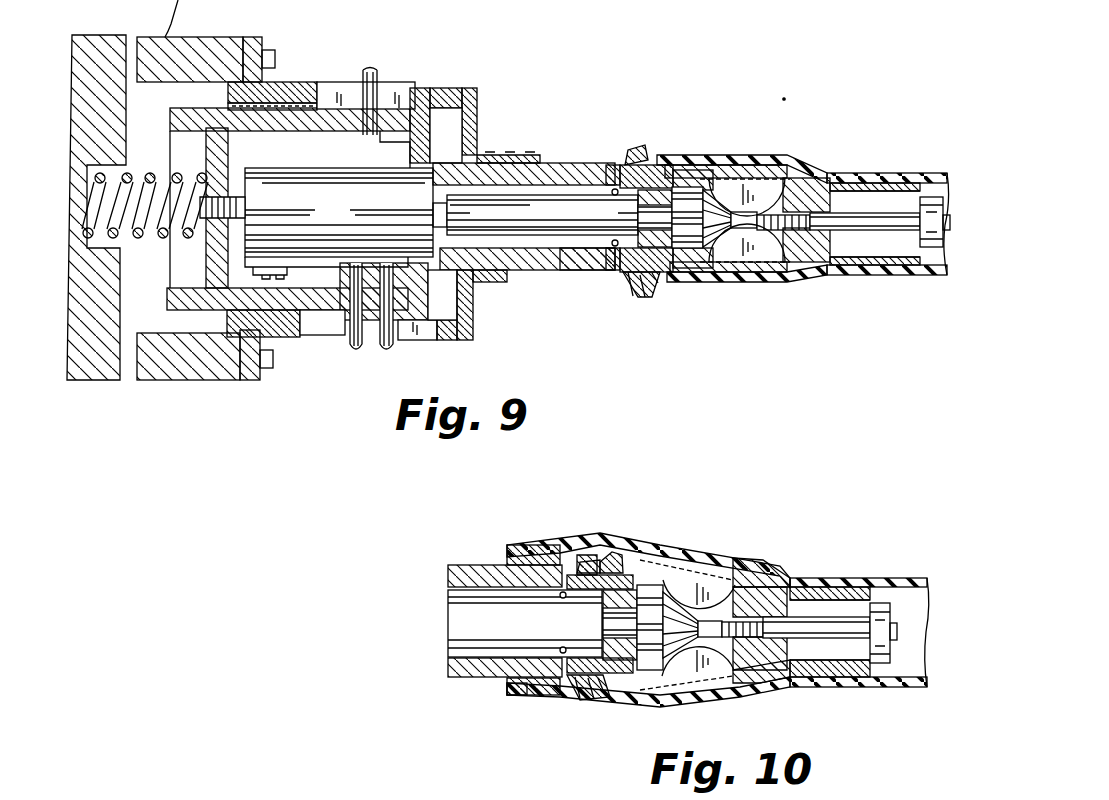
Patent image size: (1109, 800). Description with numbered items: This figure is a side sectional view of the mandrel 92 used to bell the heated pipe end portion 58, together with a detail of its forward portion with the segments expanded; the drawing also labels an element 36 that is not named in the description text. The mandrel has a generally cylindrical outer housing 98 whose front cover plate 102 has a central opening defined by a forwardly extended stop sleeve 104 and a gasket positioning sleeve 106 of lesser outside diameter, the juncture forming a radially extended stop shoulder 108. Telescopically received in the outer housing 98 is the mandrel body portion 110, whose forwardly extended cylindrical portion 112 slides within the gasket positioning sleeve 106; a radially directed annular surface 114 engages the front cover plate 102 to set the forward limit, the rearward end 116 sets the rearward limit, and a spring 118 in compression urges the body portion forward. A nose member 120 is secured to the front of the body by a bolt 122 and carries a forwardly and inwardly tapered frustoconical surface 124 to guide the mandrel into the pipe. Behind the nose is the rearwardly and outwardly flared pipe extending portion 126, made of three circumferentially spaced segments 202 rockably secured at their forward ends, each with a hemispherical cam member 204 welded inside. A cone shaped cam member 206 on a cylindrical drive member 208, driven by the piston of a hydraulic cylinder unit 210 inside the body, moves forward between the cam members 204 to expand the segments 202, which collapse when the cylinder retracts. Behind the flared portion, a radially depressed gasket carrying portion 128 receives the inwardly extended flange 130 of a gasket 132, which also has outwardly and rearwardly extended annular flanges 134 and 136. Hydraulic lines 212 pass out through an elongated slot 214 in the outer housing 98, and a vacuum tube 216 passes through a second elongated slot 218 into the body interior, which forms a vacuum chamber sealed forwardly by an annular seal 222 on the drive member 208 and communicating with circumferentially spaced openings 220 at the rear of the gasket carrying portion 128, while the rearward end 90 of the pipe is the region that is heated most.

In FIG. 9, the outer tube 36 is at (913, 175).
In FIG. 10, the outer tube 36 is at (897, 578).
In FIG. 9, the pipe end portion 58 is at (763, 158).
In FIG. 10, the pipe end portion 58 is at (583, 538).
In FIG. 9, the rearward end of the pipe 90 is at (672, 168).
In FIG. 10, the rearward end of the pipe 90 is at (508, 695).
In FIG. 9, the mandrel 92 is at (117, 392).
In FIG. 9, the outer housing 98 is at (437, 88).
In FIG. 9, the front cover plate 102 is at (475, 92).
In FIG. 9, the stop sleeve 104 is at (490, 283).
In FIG. 9, the gasket positioning sleeve 106 is at (563, 163).
In FIG. 9, the stop shoulder 108 is at (503, 281).
In FIG. 9, the mandrel body portion 110 is at (586, 158).
In FIG. 10, the mandrel body portion 110 is at (477, 560).
In FIG. 9, the cylindrical portion 112 is at (581, 272).
In FIG. 10, the cylindrical portion 112 is at (477, 677).
In FIG. 9, the annular surface 114 is at (434, 132).
In FIG. 9, the rearward end of the body portion 116 is at (170, 112).
In FIG. 9, the spring 118 is at (167, 238).
In FIG. 9, the nose member 120 is at (868, 280).
In FIG. 10, the nose member 120 is at (840, 683).
In FIG. 9, the bolt 122 is at (865, 213).
In FIG. 10, the bolt 122 is at (827, 627).
In FIG. 9, the frustoconical surface 124 is at (913, 250).
In FIG. 10, the frustoconical surface 124 is at (867, 670).
In FIG. 9, the pipe extending portion 126 is at (797, 277).
In FIG. 10, the pipe extending portion 126 is at (772, 678).
In FIG. 9, the gasket carrying portion 128 is at (615, 272).
In FIG. 10, the gasket carrying portion 128 is at (625, 570).
In FIG. 9, the inwardly extended flange 130 is at (657, 284).
In FIG. 10, the inwardly extended flange 130 is at (598, 690).
In FIG. 9, the gasket 132 is at (650, 157).
In FIG. 10, the gasket 132 is at (603, 563).
In FIG. 9, the annular flange 134 is at (639, 288).
In FIG. 10, the annular flange 134 is at (585, 698).
In FIG. 9, the annular flange 136 is at (626, 282).
In FIG. 10, the annular flange 136 is at (572, 688).
In FIG. 9, the segments 202 is at (760, 280).
In FIG. 10, the segments 202 is at (728, 667).
In FIG. 9, the hemispherical cam member 204 is at (743, 190).
In FIG. 10, the hemispherical cam member 204 is at (707, 593).
In FIG. 9, the cone shaped cam member 206 is at (689, 270).
In FIG. 10, the cone shaped cam member 206 is at (660, 610).
In FIG. 9, the drive member 208 is at (562, 224).
In FIG. 10, the drive member 208 is at (448, 624).
In FIG. 9, the hydraulic cylinder unit 210 is at (345, 215).
In FIG. 9, the hydraulic lines 212 is at (383, 352).
In FIG. 9, the elongated slot 214 is at (323, 330).
In FIG. 9, the vacuum tube 216 is at (378, 72).
In FIG. 9, the second elongated slot 218 is at (335, 98).
In FIG. 9, the openings 220 is at (628, 168).
In FIG. 10, the openings 220 is at (563, 592).
In FIG. 9, the annular seal 222 is at (687, 170).
In FIG. 10, the annular seal 222 is at (628, 595).